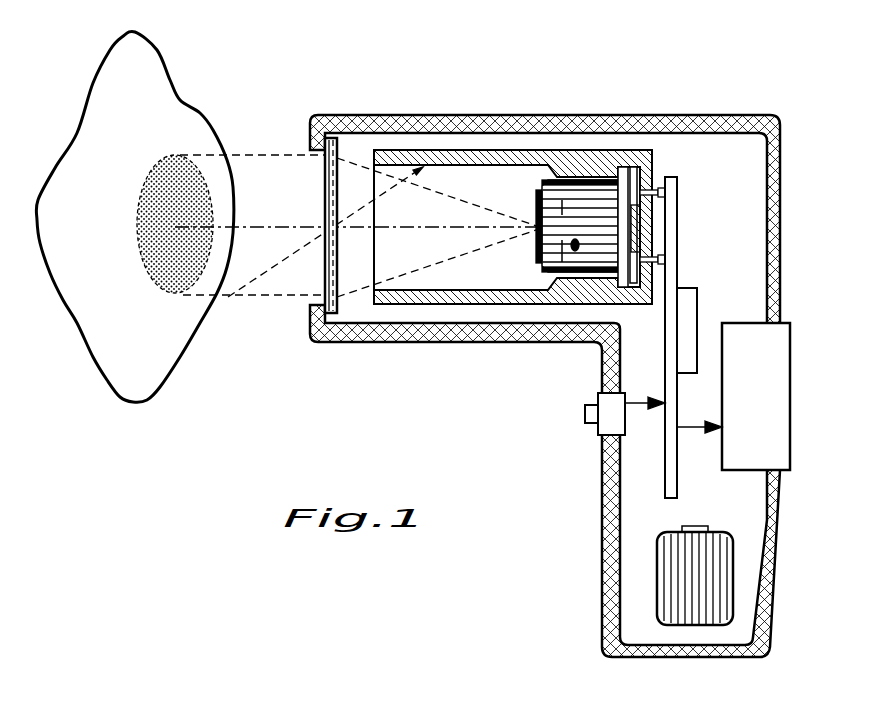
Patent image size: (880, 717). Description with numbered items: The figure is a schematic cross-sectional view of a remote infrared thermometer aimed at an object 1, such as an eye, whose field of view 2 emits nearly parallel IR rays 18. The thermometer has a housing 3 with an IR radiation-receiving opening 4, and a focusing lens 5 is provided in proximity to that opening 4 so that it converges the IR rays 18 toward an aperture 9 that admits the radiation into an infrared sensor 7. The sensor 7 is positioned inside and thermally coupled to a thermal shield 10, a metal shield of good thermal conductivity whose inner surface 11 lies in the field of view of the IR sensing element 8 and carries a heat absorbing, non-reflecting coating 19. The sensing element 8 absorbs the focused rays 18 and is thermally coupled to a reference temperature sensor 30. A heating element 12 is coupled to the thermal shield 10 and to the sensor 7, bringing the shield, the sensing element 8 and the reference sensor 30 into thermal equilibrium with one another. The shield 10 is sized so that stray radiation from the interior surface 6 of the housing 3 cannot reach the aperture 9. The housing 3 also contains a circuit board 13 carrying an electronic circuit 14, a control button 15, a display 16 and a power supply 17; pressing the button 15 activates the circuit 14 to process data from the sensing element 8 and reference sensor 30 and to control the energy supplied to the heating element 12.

The object 1 is at (140, 78).
The field of view 2 is at (140, 210).
The housing 3 is at (487, 125).
The IR radiation-receiving opening 4 is at (313, 310).
The lens 5 is at (327, 263).
The interior surface 6 is at (418, 132).
The infrared sensor 7 is at (595, 185).
The IR sensing element 8 is at (563, 273).
The aperture 9 is at (540, 228).
The thermal shield 10 is at (535, 152).
The inner surface 11 is at (410, 290).
The heating element 12 is at (633, 232).
The circuit board 13 is at (678, 240).
The electronic circuit 14 is at (690, 305).
The control button 15 is at (612, 418).
The display 16 is at (755, 392).
The power supply 17 is at (667, 578).
The IR rays 18 is at (240, 155).
The heat absorbing coating 19 is at (148, 330).
The reference temperature sensor 30 is at (613, 168).